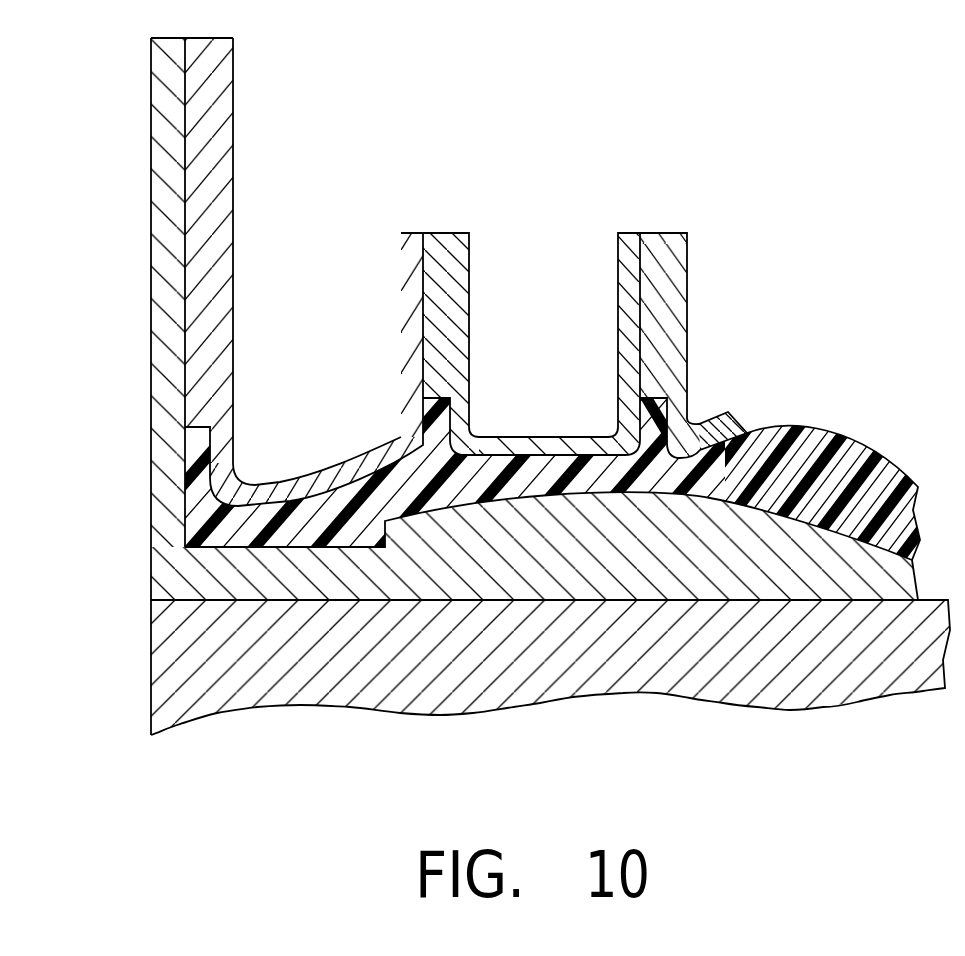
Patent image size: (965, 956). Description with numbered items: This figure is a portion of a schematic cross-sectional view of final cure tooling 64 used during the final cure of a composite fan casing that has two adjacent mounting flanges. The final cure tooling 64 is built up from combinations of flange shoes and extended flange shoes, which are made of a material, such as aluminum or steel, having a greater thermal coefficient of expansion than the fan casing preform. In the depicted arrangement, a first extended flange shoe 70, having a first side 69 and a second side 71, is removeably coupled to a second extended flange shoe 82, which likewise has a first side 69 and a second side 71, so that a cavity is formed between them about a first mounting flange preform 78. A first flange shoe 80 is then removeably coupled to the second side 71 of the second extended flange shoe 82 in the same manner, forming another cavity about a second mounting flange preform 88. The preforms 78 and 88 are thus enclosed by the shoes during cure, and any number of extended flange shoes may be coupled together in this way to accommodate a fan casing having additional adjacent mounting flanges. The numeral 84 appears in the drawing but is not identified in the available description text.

The final cure tooling 64 is at (695, 105).
The first side 69 is at (187, 160).
The first extended flange shoe 70 is at (217, 95).
The second side 71 is at (425, 278).
The first mounting flange preform 78 is at (450, 393).
The first flange shoe 80 is at (672, 323).
The second extended flange shoe 82 is at (447, 327).
The outer surface 84 is at (165, 118).
The second mounting flange preform 88 is at (648, 415).